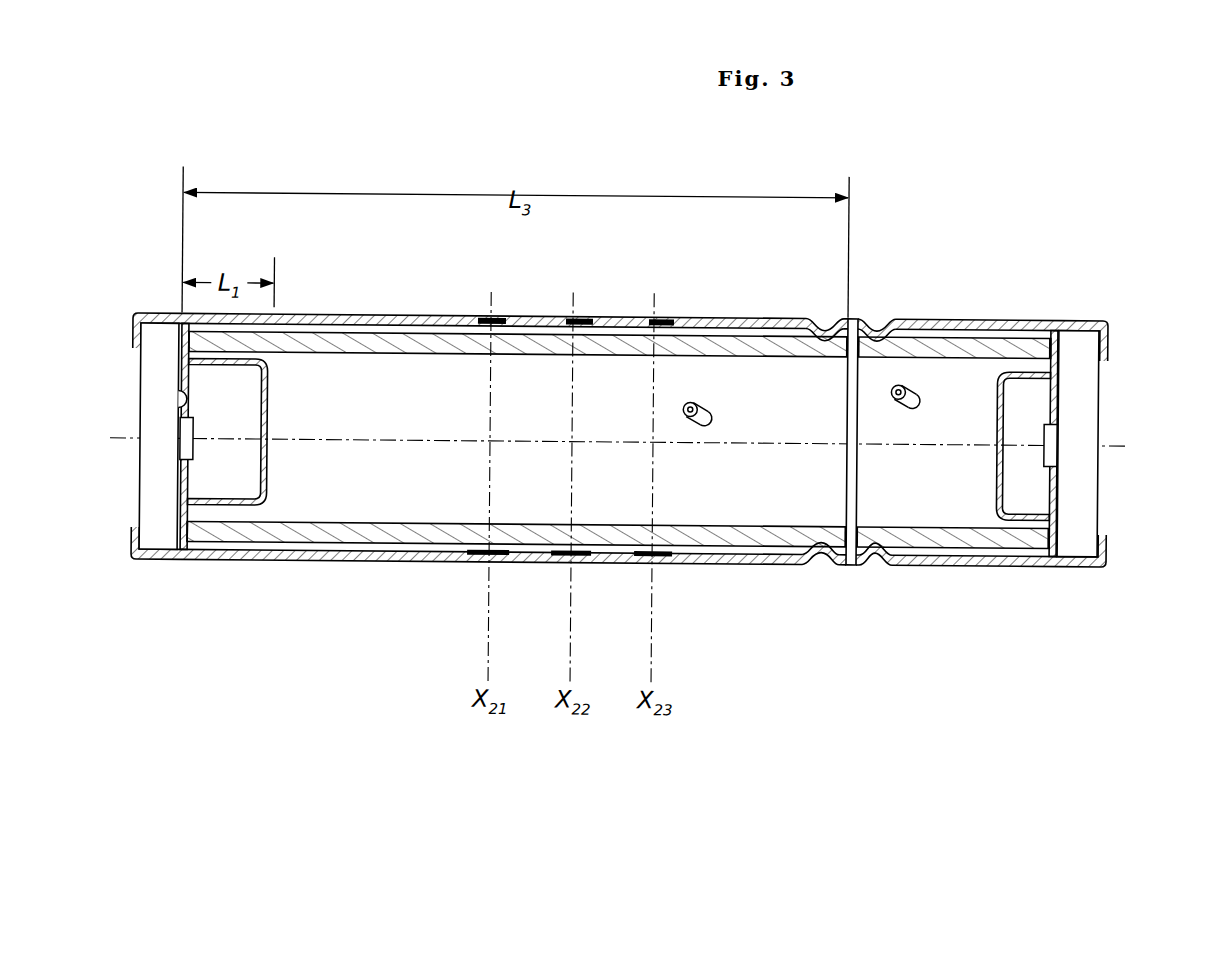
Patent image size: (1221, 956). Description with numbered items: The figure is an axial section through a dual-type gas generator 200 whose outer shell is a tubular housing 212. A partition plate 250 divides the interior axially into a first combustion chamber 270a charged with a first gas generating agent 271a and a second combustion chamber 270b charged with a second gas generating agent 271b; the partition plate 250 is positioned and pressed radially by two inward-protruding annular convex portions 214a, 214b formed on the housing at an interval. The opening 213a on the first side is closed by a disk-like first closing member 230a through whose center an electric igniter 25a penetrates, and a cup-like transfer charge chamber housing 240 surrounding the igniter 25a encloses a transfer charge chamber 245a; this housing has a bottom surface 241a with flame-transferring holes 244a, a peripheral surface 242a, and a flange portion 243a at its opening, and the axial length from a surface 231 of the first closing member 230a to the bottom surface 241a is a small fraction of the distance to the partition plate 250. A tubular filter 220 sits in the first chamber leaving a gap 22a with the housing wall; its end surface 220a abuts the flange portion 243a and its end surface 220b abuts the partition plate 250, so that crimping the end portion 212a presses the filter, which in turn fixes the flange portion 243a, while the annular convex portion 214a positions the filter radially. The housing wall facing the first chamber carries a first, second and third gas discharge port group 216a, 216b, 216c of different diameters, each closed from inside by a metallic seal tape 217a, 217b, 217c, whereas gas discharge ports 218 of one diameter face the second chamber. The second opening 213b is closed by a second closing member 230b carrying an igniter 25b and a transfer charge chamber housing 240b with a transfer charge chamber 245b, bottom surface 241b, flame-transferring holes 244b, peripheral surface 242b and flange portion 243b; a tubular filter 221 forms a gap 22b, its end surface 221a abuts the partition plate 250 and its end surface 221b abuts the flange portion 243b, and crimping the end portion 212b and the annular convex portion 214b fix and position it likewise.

The gas generator 200 is at (624, 411).
The tubular housing 212 is at (623, 459).
The end portion 212a is at (135, 545).
The end portion 212b is at (1105, 545).
The opening 213a is at (136, 353).
The opening 213b is at (1106, 354).
The annular convex portion 214a is at (822, 565).
The annular convex portion 214b is at (878, 563).
The first gas discharge port group 216a is at (478, 558).
The second gas discharge port group 216b is at (562, 558).
The third gas discharge port group 216c is at (645, 558).
The seal tape 217a is at (465, 324).
The seal tape 217b is at (555, 324).
The seal tape 217c is at (638, 324).
The gas discharge ports 218 is at (957, 317).
The tubular filter 220 is at (345, 546).
The end surface 220a is at (184, 334).
The end surface 220b is at (846, 353).
The tubular filter 221 is at (915, 546).
The end surface 221a is at (848, 527).
The end surface 221b is at (1042, 340).
The gap 22a is at (712, 563).
The gap 22b is at (940, 562).
The first closing member 230a is at (152, 473).
The second closing member 230b is at (1086, 421).
The surface 231 is at (179, 408).
The transfer charge chamber housing 240 is at (259, 469).
The transfer charge chamber housing 240b is at (1044, 475).
The bottom surface 241a is at (268, 414).
The bottom surface 241b is at (998, 410).
The peripheral surface 242a is at (250, 510).
The peripheral surface 242b is at (1015, 518).
The flange portion 243a is at (196, 554).
The flange portion 243b is at (1040, 556).
The flame-transferring holes 244a is at (268, 490).
The flame-transferring holes 244b is at (998, 490).
The transfer charge chamber 245a is at (225, 431).
The transfer charge chamber 245b is at (1045, 481).
The electric igniter 25a is at (194, 457).
The electric igniter 25b is at (1045, 428).
The partition plate 250 is at (850, 317).
The first combustion chamber 270a is at (554, 439).
The second combustion chamber 270b is at (927, 442).
The first gas generating agent 271a is at (706, 411).
The second gas generating agent 271b is at (908, 391).